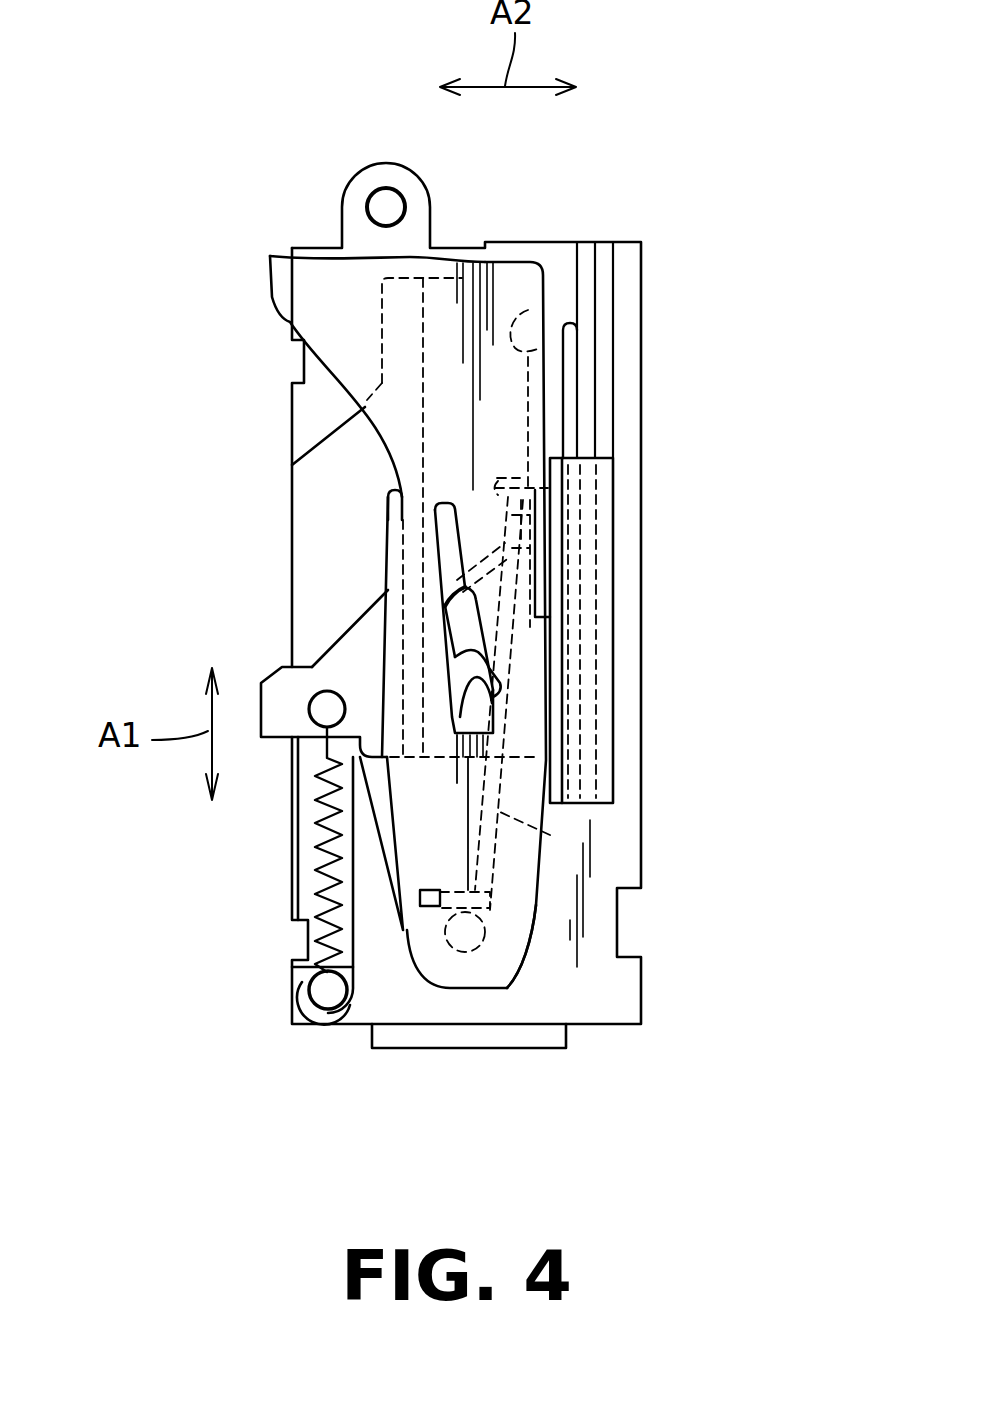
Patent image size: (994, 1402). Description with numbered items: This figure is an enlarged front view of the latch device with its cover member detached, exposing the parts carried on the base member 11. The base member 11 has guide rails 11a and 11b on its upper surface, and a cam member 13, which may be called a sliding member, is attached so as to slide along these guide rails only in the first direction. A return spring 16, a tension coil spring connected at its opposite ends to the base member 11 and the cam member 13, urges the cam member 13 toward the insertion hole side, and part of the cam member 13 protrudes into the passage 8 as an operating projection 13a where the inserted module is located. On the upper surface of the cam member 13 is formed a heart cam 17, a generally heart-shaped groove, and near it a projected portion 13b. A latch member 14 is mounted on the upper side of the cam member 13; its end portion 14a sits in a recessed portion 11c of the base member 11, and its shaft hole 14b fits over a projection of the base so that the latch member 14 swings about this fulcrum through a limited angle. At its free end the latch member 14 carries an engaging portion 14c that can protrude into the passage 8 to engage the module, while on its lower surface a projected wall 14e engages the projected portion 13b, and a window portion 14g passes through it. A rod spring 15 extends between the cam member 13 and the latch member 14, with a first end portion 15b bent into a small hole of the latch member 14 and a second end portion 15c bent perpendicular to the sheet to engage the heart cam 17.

The passage 8 is at (104, 580).
The base member 11 is at (623, 985).
The guide rail 11a is at (587, 362).
The guide rail 11b is at (400, 363).
The recessed portion 11c is at (540, 932).
The cam member 13 is at (610, 655).
The operating projection 13a is at (270, 690).
The projected portion 13b is at (530, 463).
The latch member 14 is at (505, 272).
The end portion 14a is at (507, 960).
The shaft hole 14b is at (457, 943).
The engaging portion 14c is at (285, 280).
The projected wall 14e is at (513, 307).
The window portion 14g is at (436, 540).
The rod spring 15 is at (550, 836).
The first end portion 15b is at (427, 903).
The second end portion 15c is at (527, 522).
The return spring 16 is at (313, 838).
The heart cam 17 is at (440, 670).